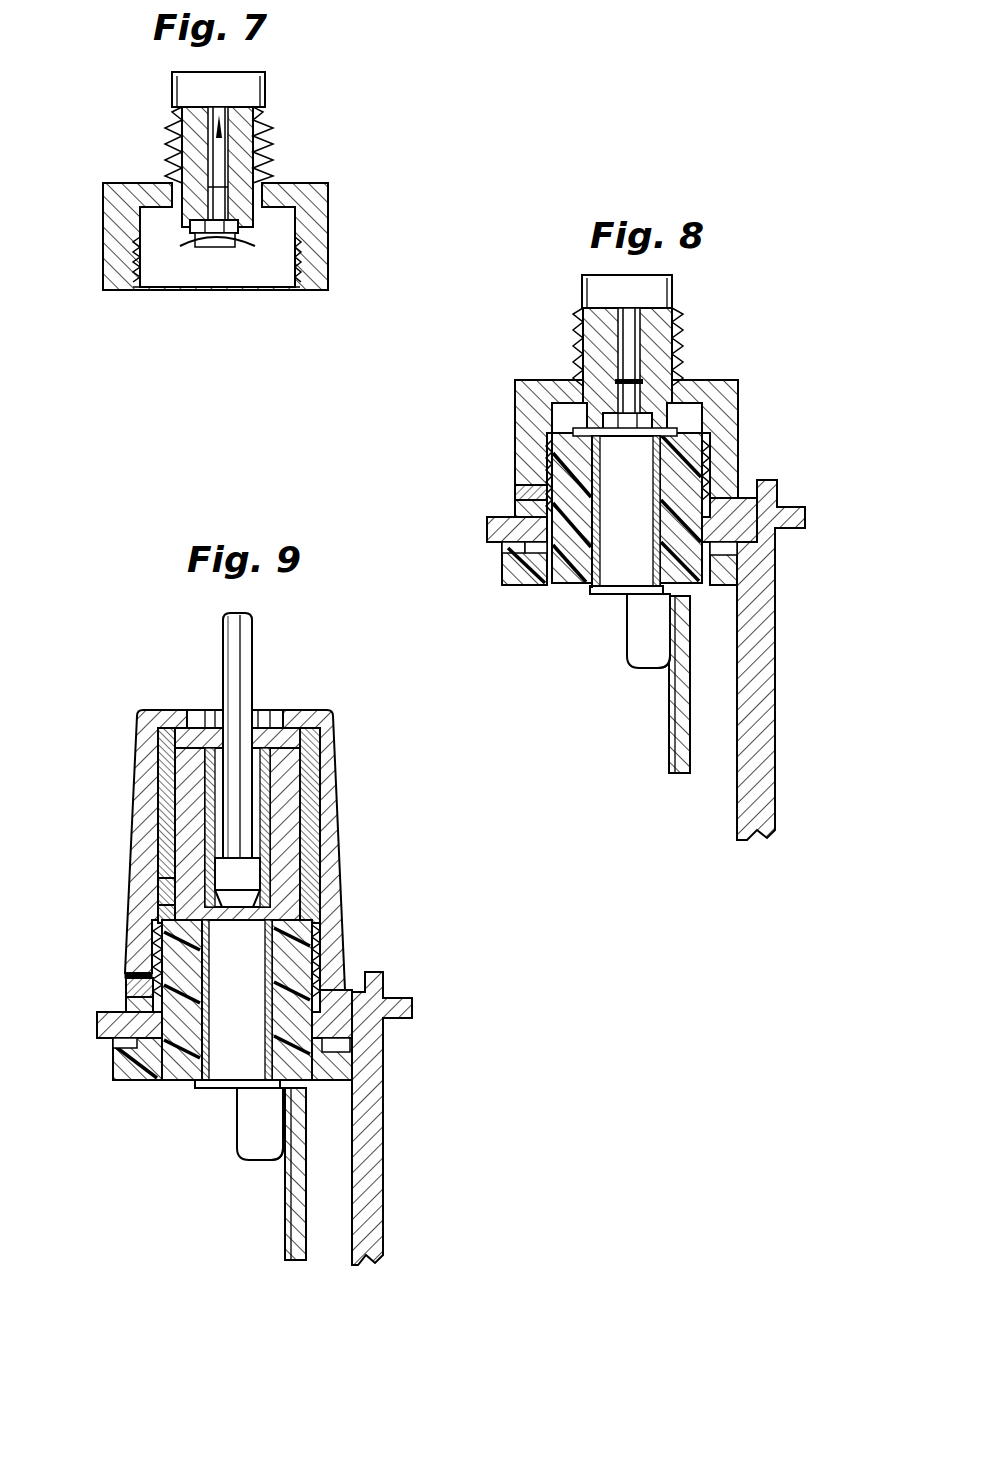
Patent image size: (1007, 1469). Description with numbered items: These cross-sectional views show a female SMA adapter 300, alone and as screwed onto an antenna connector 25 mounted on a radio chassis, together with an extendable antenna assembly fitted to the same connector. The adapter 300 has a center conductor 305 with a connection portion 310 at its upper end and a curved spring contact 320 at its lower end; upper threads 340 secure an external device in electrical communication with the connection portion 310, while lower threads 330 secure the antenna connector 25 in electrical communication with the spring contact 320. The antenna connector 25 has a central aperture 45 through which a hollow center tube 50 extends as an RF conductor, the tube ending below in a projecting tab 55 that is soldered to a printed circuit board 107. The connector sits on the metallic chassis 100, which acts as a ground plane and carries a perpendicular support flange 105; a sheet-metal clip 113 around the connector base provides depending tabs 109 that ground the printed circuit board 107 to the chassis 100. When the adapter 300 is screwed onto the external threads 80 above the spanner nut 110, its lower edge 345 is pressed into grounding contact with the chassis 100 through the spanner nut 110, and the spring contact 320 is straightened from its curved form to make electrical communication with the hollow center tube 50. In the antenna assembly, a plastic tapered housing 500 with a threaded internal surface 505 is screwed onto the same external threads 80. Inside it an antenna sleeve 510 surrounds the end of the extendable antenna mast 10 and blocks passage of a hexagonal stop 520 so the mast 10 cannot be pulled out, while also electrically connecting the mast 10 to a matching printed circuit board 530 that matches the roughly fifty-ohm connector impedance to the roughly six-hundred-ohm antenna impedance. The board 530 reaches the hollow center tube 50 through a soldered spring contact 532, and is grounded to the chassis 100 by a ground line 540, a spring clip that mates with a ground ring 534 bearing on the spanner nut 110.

In FIG. 9, the extendable antenna mast 10 is at (253, 657).
In FIG. 8, the antenna connector 25 is at (500, 558).
In FIG. 9, the antenna connector 25 is at (116, 1060).
In FIG. 8, the central aperture 45 is at (625, 577).
In FIG. 9, the central aperture 45 is at (221, 1070).
In FIG. 8, the hollow center tube 50 is at (590, 547).
In FIG. 9, the hollow center tube 50 is at (197, 1035).
In FIG. 8, the projecting tab 55 is at (667, 623).
In FIG. 9, the projecting tab 55 is at (276, 1122).
In FIG. 8, the external threads 80 is at (543, 458).
In FIG. 9, the external threads 80 is at (128, 953).
In FIG. 8, the metallic chassis 100 is at (777, 712).
In FIG. 9, the metallic chassis 100 is at (388, 1162).
In FIG. 8, the support flange 105 is at (490, 530).
In FIG. 9, the support flange 105 is at (98, 1028).
In FIG. 8, the printed circuit board 107 is at (677, 776).
In FIG. 9, the printed circuit board 107 is at (297, 1264).
In FIG. 8, the depending tabs 109 is at (647, 671).
In FIG. 9, the depending tabs 109 is at (256, 1162).
In FIG. 8, the spanner nut 110 is at (518, 491).
In FIG. 9, the spanner nut 110 is at (126, 996).
In FIG. 9, the clip 113 is at (114, 1041).
In FIG. 7, the female SMA adapter 300 is at (310, 192).
In FIG. 8, the female SMA adapter 300 is at (732, 420).
In FIG. 7, the center conductor 305 is at (213, 203).
In FIG. 7, the connection portion 310 is at (222, 163).
In FIG. 8, the connection portion 310 is at (632, 345).
In FIG. 7, the curved spring contact 320 is at (180, 248).
In FIG. 8, the curved spring contact 320 is at (678, 402).
In FIG. 7, the lower threads 330 is at (292, 257).
In FIG. 8, the lower threads 330 is at (733, 463).
In FIG. 7, the upper threads 340 is at (165, 124).
In FIG. 8, the upper threads 340 is at (573, 316).
In FIG. 7, the lower edge 345 is at (112, 292).
In FIG. 9, the tapered housing 500 is at (330, 786).
In FIG. 9, the threaded internal surface 505 is at (346, 932).
In FIG. 9, the antenna sleeve 510 is at (320, 727).
In FIG. 9, the hexagonal stop 520 is at (250, 878).
In FIG. 9, the matching printed circuit board 530 is at (165, 836).
In FIG. 9, the spring contact 532 is at (162, 895).
In FIG. 9, the ground ring 534 is at (126, 975).
In FIG. 9, the ground line 540 is at (167, 912).